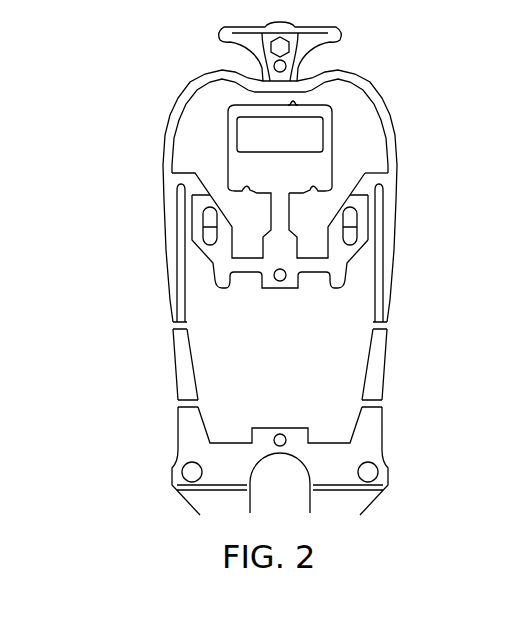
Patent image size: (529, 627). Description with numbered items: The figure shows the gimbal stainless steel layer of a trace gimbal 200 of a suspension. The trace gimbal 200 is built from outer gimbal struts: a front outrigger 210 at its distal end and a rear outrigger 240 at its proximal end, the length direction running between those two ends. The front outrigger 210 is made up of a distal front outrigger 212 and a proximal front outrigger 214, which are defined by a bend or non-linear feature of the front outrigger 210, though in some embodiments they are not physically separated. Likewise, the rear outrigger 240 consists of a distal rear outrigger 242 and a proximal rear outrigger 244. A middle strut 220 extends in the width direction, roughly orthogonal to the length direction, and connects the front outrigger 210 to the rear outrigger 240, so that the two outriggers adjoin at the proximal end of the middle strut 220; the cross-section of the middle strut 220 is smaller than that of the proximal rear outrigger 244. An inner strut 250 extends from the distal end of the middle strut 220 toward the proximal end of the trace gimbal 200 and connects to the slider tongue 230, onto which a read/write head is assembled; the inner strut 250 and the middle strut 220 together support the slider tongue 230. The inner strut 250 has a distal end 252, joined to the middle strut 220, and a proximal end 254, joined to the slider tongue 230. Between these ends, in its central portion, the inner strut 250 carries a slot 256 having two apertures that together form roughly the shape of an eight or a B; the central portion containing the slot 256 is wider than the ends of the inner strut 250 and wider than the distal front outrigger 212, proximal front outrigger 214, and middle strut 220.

The trace gimbal 200 is at (140, 127).
The front outrigger 210 is at (400, 108).
The distal front outrigger 212 is at (368, 83).
The proximal front outrigger 214 is at (400, 160).
The middle strut 220 is at (383, 183).
The slider tongue 230 is at (270, 281).
The rear outrigger 240 is at (400, 338).
The distal rear outrigger 242 is at (383, 223).
The proximal rear outrigger 244 is at (383, 393).
The inner strut 250 is at (333, 235).
The distal end 252 is at (358, 186).
The proximal end 254 is at (348, 267).
The slot 256 is at (349, 238).